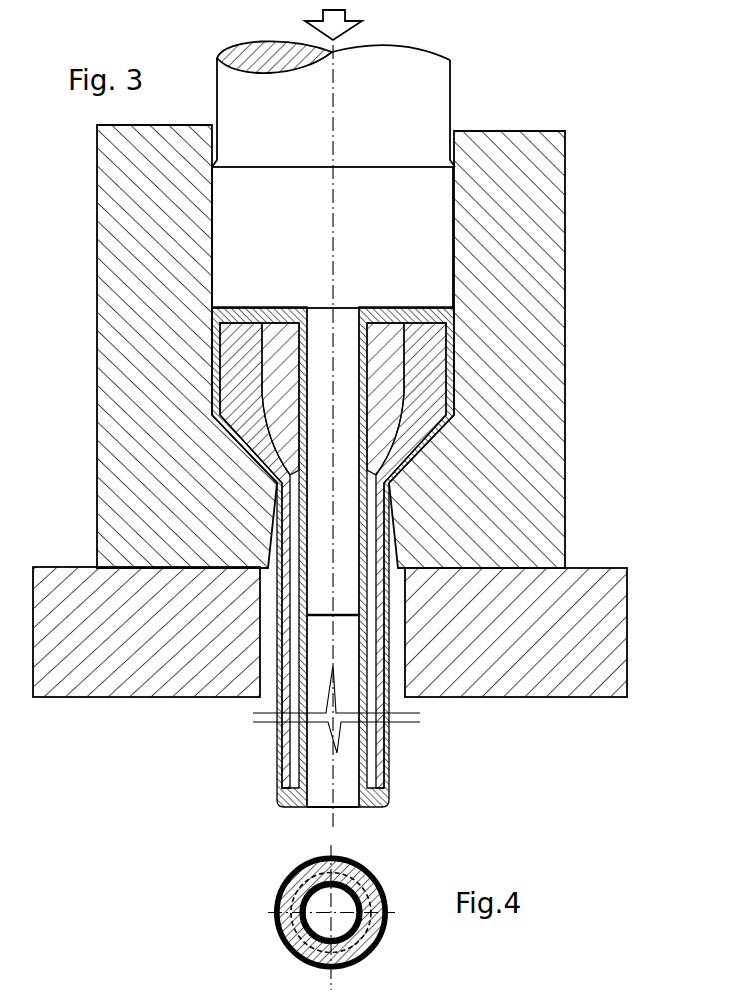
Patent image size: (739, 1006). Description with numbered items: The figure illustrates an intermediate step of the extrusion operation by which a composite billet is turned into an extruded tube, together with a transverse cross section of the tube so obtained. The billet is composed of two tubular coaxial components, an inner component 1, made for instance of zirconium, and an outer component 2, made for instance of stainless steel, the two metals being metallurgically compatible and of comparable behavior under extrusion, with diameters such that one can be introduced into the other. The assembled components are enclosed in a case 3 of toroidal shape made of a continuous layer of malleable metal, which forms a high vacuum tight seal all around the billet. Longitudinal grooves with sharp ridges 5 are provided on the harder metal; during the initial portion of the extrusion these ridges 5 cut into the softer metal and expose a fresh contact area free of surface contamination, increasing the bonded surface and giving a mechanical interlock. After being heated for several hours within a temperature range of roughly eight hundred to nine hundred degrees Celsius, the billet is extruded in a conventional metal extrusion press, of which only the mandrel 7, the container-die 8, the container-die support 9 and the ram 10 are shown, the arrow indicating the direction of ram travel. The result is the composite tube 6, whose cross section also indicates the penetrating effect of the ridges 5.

In FIG. 3, the inner tubular component 1 is at (287, 348).
In FIG. 4, the inner tubular component 1 is at (282, 883).
In FIG. 3, the outer tubular component 2 is at (245, 396).
In FIG. 4, the outer tubular component 2 is at (377, 877).
In FIG. 3, the case 3 is at (305, 445).
In FIG. 4, the case 3 is at (385, 937).
In FIG. 4, the longitudinal grooves with sharp ridges 5 is at (278, 926).
In FIG. 3, the composite tube 6 is at (311, 660).
In FIG. 3, the mandrel 7 is at (380, 259).
In FIG. 3, the container-die 8 is at (538, 268).
In FIG. 3, the container-die support 9 is at (588, 583).
In FIG. 3, the ram 10 is at (433, 92).